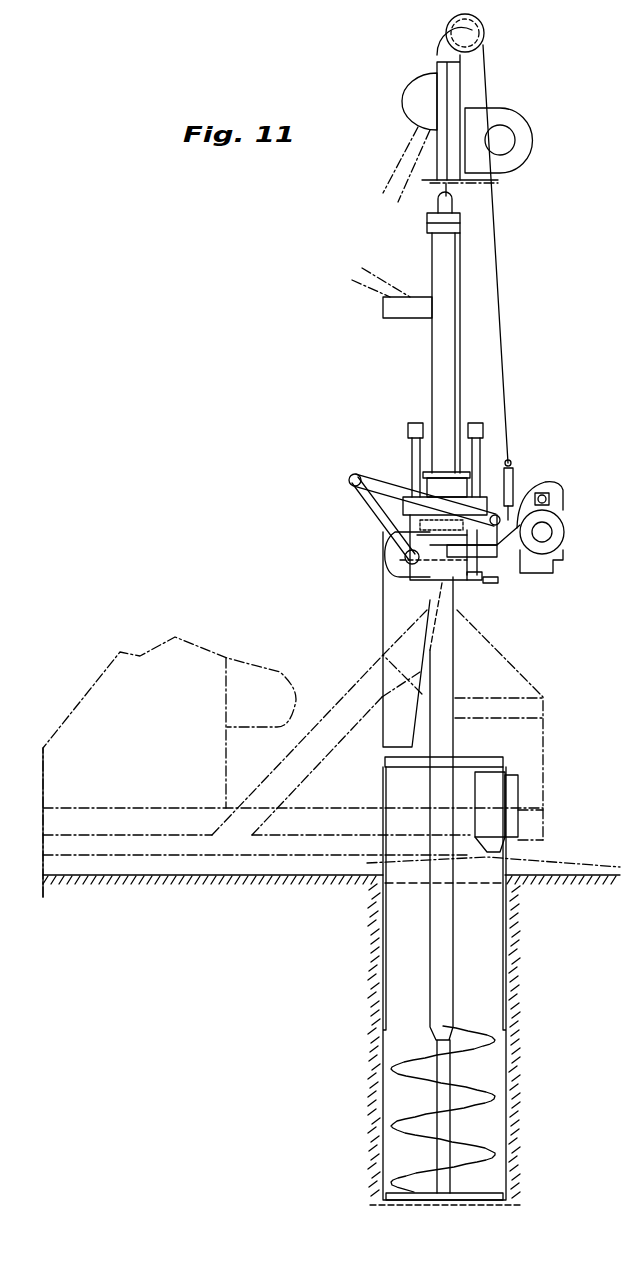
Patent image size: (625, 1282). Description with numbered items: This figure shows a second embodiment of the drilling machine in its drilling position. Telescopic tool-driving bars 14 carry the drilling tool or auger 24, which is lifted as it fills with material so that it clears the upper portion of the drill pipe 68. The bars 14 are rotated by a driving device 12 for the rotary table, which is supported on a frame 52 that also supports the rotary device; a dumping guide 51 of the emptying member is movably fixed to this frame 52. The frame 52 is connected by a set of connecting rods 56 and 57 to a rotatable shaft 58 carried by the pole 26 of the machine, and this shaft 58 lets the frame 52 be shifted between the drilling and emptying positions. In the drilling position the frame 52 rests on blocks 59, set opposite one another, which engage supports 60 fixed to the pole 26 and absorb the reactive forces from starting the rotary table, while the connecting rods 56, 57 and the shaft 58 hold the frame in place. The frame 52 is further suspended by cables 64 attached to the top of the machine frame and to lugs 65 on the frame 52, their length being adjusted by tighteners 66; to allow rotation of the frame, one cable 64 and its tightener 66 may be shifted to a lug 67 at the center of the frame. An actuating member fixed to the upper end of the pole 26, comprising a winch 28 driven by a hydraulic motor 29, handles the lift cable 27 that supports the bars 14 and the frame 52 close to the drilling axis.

The driving device 12 is at (565, 532).
The tool-driving bars 14 is at (447, 405).
The drilling tool or auger 24 is at (487, 1098).
The pole 26 is at (432, 198).
The cable 27 is at (447, 140).
The winch 28 is at (485, 38).
The hydraulic motor 29 is at (533, 130).
The dumping guide 51 is at (390, 603).
The frame 52 is at (513, 562).
The connecting rod 56 is at (373, 470).
The connecting rod 57 is at (363, 500).
The rotatable shaft 58 is at (400, 556).
The blocks 59 is at (495, 583).
The supports 60 is at (470, 585).
The cables 64 is at (507, 380).
The lugs 65 is at (538, 487).
The tighteners 66 is at (516, 482).
The lug 67 is at (550, 500).
The drill pipe 68 is at (493, 797).